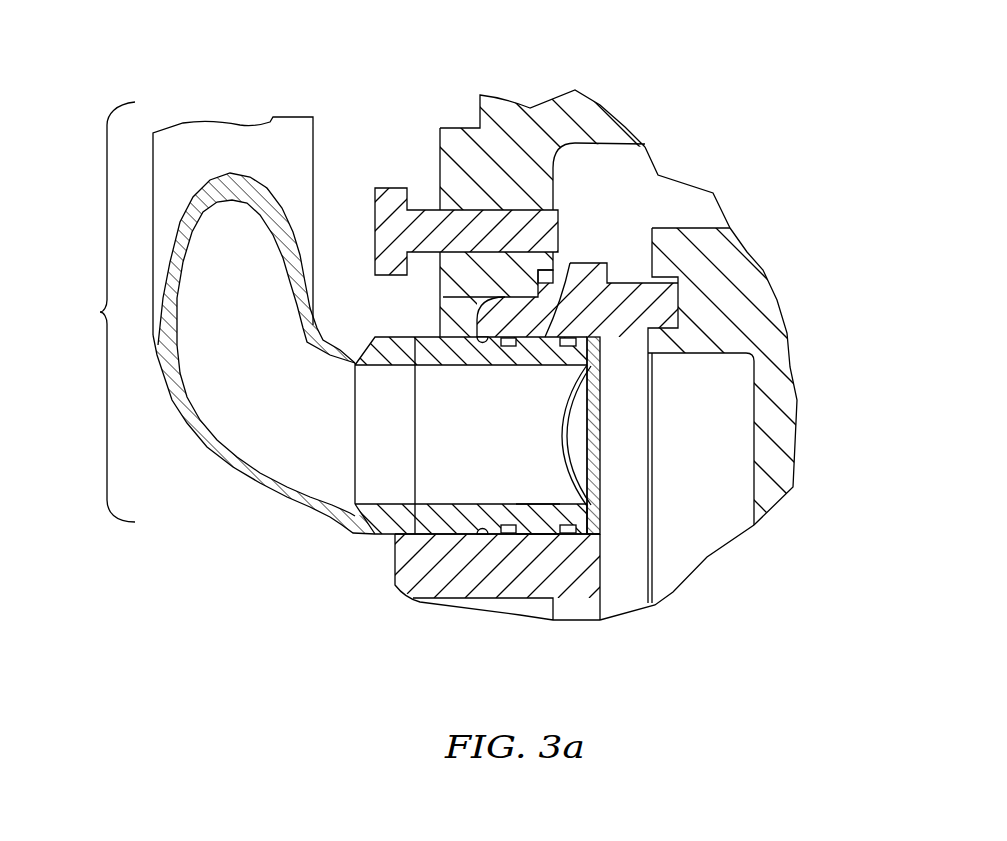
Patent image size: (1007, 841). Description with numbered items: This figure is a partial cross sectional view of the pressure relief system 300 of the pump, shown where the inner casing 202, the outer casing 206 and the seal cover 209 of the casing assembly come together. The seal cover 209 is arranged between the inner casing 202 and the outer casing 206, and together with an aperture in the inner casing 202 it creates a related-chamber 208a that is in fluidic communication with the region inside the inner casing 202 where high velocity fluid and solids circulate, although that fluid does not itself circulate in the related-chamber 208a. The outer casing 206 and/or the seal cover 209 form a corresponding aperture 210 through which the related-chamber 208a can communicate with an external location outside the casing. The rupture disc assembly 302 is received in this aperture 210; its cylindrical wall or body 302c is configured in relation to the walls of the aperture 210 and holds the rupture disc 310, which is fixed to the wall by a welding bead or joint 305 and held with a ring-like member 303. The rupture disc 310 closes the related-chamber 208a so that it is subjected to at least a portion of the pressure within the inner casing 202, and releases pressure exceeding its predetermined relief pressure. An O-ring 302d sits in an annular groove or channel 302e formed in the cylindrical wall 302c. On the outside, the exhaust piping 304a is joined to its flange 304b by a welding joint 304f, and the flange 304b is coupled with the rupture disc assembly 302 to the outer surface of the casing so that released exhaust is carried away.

The pressure relief system 300 is at (267, 293).
The exhaust piping 304a is at (270, 143).
The flange 304b is at (388, 520).
The welding joint 304f is at (337, 522).
The rupture disc assembly 302 is at (420, 338).
The cylindrical wall or body 302c is at (532, 527).
The O-ring 302d is at (567, 535).
The annular groove or channel 302e is at (497, 535).
The ring-like member 303 is at (588, 350).
The welding bead or joint 305 is at (583, 520).
The rupture disc 310 is at (557, 434).
The outer casing 206 is at (595, 50).
The seal cover 209 is at (648, 300).
The aperture 210 is at (525, 338).
The inner casing 202 is at (765, 325).
The related-chamber 208a is at (693, 522).